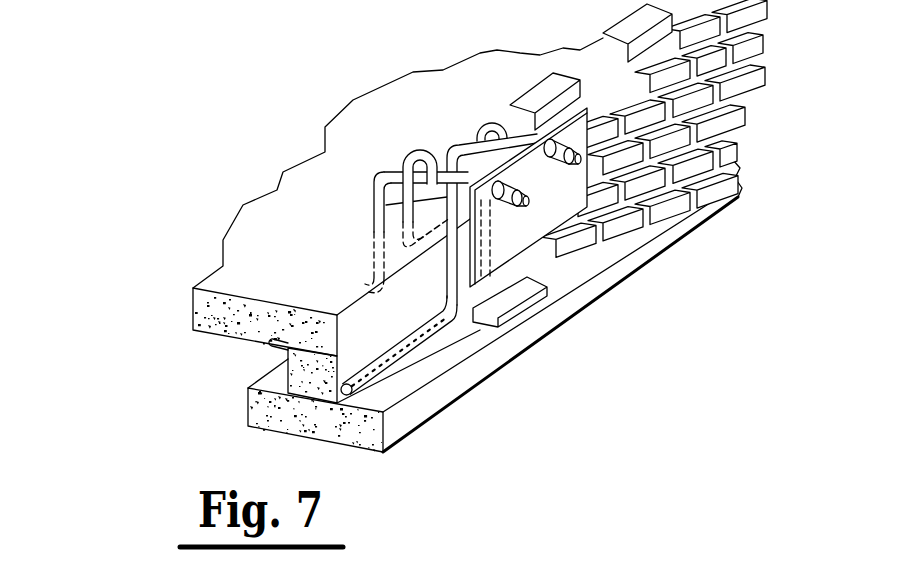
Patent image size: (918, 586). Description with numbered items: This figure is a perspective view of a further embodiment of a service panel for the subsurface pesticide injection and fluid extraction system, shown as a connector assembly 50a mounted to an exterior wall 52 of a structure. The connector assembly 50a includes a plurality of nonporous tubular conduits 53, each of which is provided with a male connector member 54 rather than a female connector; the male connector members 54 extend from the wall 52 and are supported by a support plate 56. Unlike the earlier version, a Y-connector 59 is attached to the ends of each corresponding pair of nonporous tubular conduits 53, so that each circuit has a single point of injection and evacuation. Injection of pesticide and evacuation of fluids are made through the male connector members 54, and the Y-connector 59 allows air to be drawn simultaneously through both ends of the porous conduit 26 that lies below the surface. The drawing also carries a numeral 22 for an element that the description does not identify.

The concrete floor slab 22 is at (260, 248).
The porous conduit 26 is at (372, 382).
The connector assembly 50a is at (492, 112).
The exterior wall 52 is at (700, 127).
The nonporous tubular conduit 53 is at (380, 178).
The male connector member 54 is at (580, 160).
The support plate 56 is at (530, 215).
The Y-connector 59 is at (373, 208).